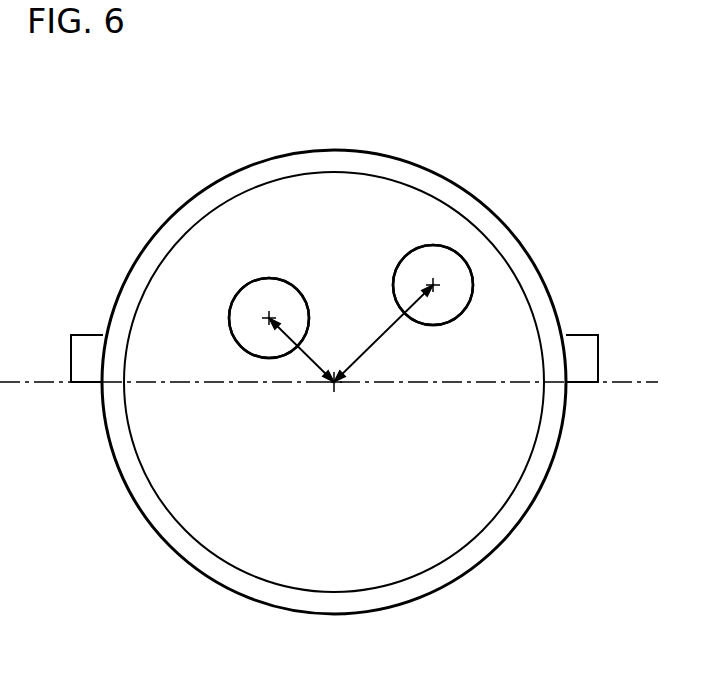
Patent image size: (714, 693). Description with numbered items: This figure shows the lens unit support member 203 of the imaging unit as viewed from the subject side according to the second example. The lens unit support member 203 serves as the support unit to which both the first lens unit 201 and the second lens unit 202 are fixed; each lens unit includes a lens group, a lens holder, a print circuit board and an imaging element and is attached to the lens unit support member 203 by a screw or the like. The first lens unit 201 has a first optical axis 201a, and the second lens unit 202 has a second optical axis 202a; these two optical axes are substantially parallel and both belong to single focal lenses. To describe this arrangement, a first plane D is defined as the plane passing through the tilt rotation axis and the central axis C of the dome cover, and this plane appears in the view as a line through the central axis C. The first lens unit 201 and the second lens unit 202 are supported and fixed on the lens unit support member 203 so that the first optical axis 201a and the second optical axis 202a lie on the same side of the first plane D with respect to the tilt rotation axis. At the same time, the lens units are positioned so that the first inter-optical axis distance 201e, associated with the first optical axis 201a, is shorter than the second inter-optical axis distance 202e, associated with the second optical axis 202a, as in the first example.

The first lens unit 201 is at (227, 231).
The first optical axis 201a is at (144, 280).
The first inter-optical axis distance 201e is at (188, 435).
The second lens unit 202 is at (458, 215).
The second optical axis 202a is at (539, 261).
The second inter-optical axis distance 202e is at (513, 418).
The lens unit support member 203 is at (334, 419).
The central axis of the dome cover C is at (351, 487).
The first plane D is at (342, 384).